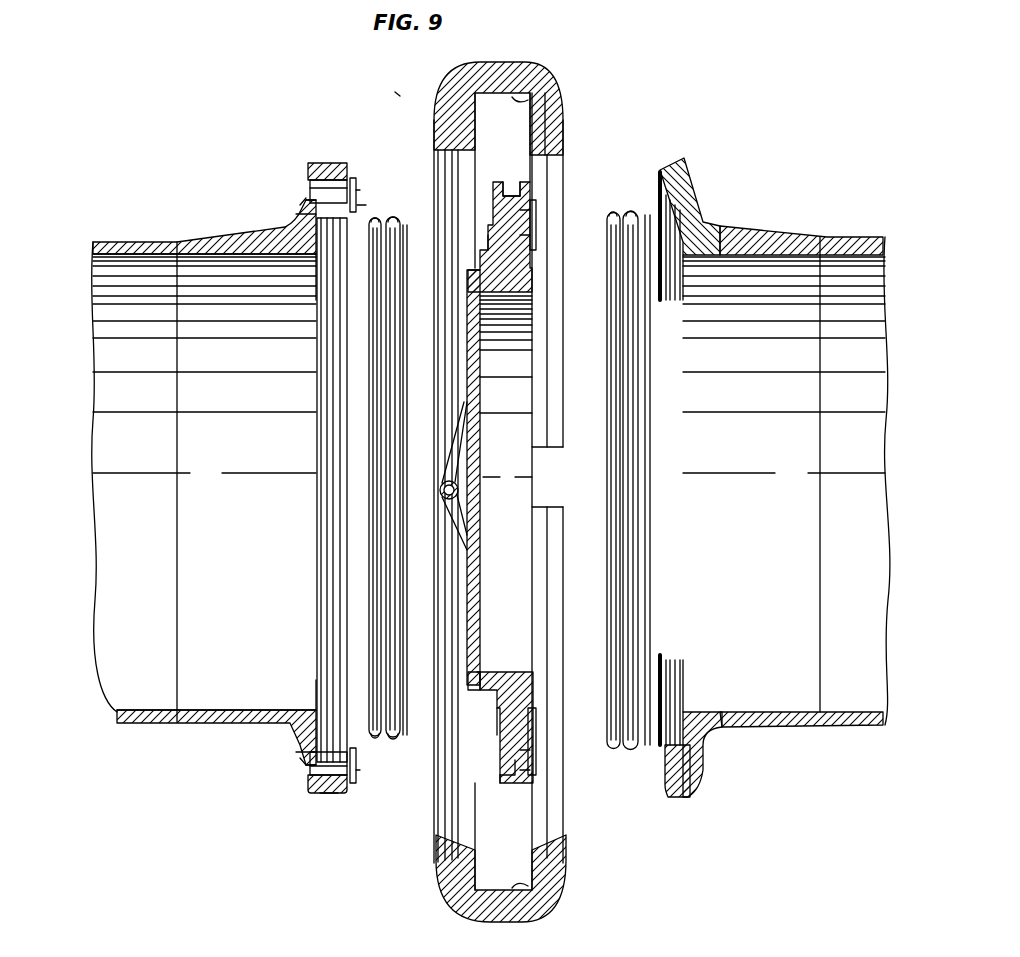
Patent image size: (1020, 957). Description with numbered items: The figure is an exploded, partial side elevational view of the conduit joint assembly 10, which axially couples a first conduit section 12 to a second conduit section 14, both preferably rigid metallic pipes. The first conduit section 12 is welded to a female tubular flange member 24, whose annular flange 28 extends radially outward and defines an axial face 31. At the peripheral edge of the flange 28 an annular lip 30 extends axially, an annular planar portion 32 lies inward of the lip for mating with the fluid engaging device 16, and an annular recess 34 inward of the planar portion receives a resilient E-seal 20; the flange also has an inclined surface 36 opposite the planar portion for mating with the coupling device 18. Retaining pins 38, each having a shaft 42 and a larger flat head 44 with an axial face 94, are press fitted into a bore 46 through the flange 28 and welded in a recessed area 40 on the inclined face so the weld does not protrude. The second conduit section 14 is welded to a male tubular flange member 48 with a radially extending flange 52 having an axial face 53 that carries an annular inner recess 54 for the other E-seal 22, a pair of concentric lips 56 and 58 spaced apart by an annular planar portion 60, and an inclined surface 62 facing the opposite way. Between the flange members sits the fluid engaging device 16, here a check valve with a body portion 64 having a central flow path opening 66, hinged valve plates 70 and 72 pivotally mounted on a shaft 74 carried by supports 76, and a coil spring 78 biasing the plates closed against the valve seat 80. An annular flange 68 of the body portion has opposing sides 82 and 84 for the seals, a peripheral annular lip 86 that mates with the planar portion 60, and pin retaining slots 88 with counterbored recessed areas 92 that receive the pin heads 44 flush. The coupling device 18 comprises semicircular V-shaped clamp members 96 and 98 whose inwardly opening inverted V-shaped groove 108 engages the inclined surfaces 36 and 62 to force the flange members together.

The conduit joint assembly 10 is at (396, 92).
The first conduit section 12 is at (130, 242).
The second conduit section 14 is at (850, 237).
The fluid engaging device 16 is at (455, 272).
The coupling device 18 is at (523, 58).
The E-seal 20 is at (401, 298).
The E-seal 22 is at (608, 330).
The female tubular flange member 24 is at (203, 242).
The annular flange 28 is at (325, 160).
The annular lip 30 is at (345, 172).
The axial face 31 is at (366, 208).
The annular planar portion 32 is at (334, 228).
The annular recess 34 is at (322, 300).
The inclined surface 36 is at (304, 192).
The retaining pin 38 is at (310, 192).
The recessed area 40 is at (300, 212).
The shaft 42 is at (378, 218).
The head 44 is at (358, 184).
The bore 46 is at (330, 792).
The male tubular flange member 48 is at (735, 228).
The radially extending flange 52 is at (675, 158).
The axial face 53 is at (650, 222).
The annular inner recess 54 is at (676, 290).
The lip 56 is at (658, 195).
The lip 58 is at (663, 173).
The annular planar portion 60 is at (665, 185).
The inclined surface 62 is at (703, 205).
The body portion 64 is at (532, 275).
The central flow path opening 66 is at (507, 455).
The annular flange 68 is at (503, 180).
The valve plate 70 is at (480, 385).
The valve plate 72 is at (480, 505).
The shaft 74 is at (445, 493).
The support 76 is at (440, 482).
The coil spring 78 is at (457, 446).
The valve seat 80 is at (470, 295).
The side 82 is at (533, 255).
The side 84 is at (490, 248).
The annular lip 86 is at (522, 214).
The pin retaining slot 88 is at (522, 196).
The counterbored recessed area 92 is at (522, 236).
The axial face 94 is at (360, 198).
The clamp member 96 is at (545, 85).
The clamp member 98 is at (566, 880).
The inverted V-shaped groove 108 is at (517, 103).